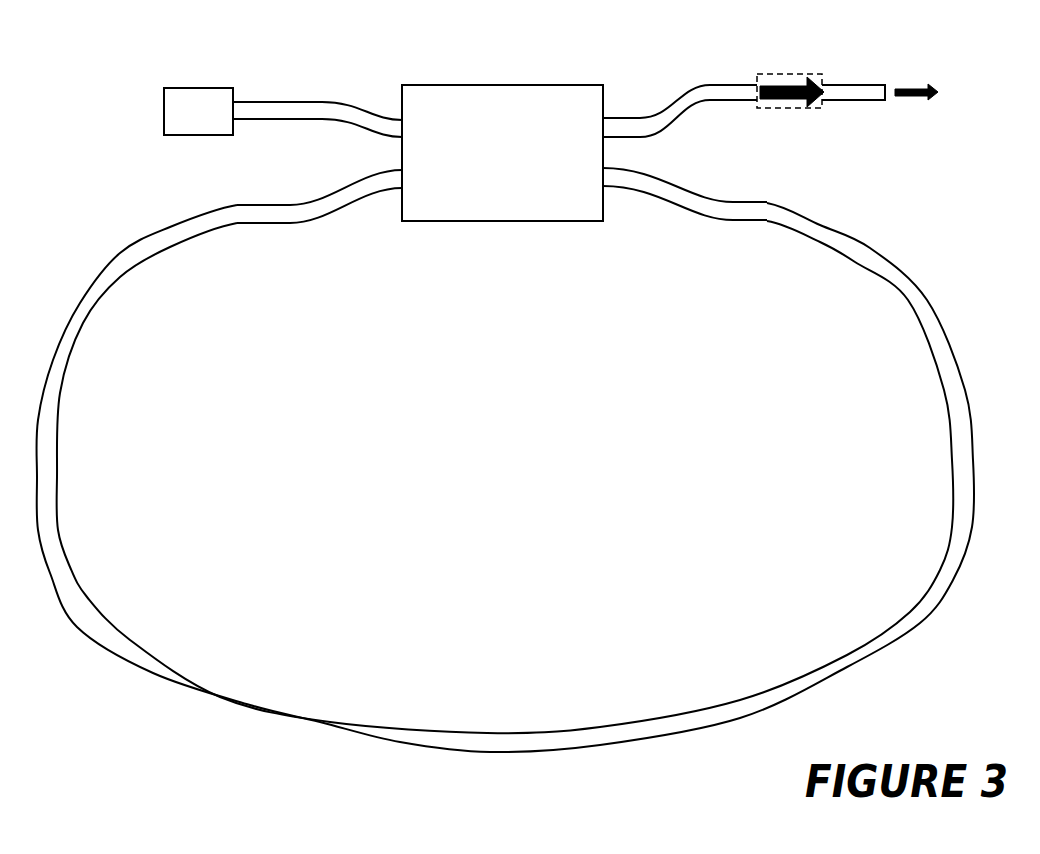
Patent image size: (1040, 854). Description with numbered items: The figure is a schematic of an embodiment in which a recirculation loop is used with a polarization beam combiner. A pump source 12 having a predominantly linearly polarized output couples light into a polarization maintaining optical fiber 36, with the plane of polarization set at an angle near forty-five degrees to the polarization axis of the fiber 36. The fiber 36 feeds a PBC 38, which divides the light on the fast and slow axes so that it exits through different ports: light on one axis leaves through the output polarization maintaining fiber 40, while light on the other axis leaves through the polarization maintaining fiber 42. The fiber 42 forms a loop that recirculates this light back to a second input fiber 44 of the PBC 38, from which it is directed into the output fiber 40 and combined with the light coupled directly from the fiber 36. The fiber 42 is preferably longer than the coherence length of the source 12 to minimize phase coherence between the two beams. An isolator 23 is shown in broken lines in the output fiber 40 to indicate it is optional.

The pump source 12 is at (183, 93).
The polarization maintaining optical fiber 36 is at (277, 110).
The polarization beam combiner 38 is at (522, 92).
The output polarization maintaining fiber 40 is at (716, 92).
The isolator 23 is at (793, 84).
The polarization maintaining fiber 42 is at (742, 212).
The second input fiber 44 is at (398, 188).